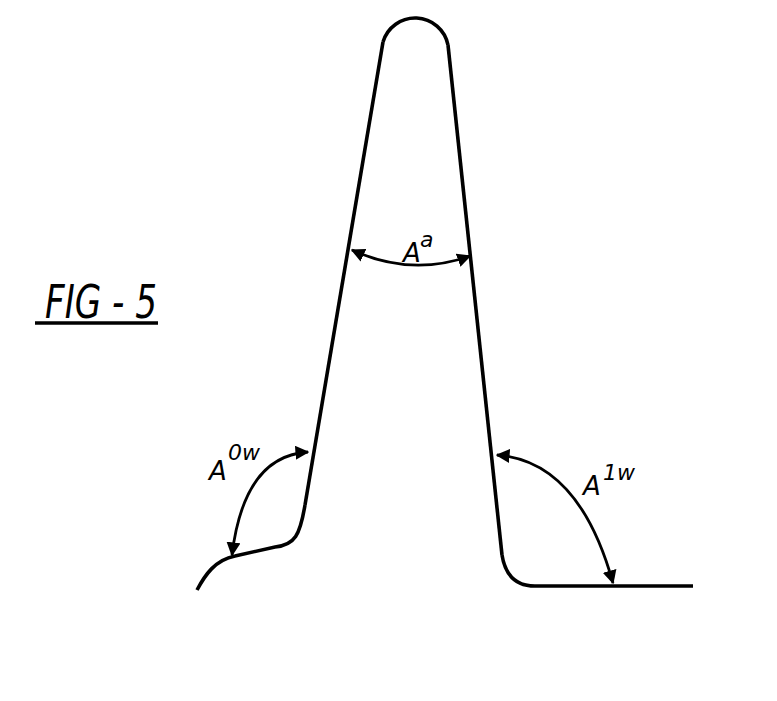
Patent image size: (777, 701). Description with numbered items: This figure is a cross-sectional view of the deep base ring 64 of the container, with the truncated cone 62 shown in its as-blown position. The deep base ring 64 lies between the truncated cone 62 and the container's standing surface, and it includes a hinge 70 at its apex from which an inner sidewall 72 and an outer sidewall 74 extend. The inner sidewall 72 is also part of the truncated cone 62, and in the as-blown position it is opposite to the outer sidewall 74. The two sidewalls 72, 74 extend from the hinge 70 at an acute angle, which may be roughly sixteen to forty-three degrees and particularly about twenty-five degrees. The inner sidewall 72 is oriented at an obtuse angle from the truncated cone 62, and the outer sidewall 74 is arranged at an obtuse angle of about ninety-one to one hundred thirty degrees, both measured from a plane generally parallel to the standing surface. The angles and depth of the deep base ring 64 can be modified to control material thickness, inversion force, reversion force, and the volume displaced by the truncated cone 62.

The hinge 70 is at (412, 19).
The outer sidewall 74 is at (327, 395).
The inner sidewall 72 is at (485, 402).
The deep base ring 64 is at (308, 485).
The truncated cone 62 is at (650, 586).